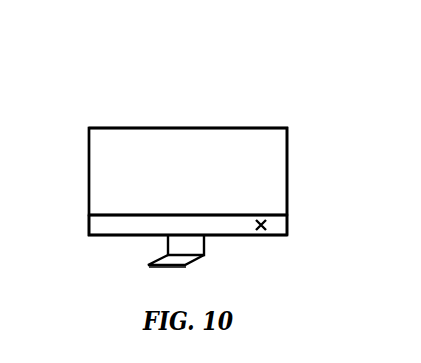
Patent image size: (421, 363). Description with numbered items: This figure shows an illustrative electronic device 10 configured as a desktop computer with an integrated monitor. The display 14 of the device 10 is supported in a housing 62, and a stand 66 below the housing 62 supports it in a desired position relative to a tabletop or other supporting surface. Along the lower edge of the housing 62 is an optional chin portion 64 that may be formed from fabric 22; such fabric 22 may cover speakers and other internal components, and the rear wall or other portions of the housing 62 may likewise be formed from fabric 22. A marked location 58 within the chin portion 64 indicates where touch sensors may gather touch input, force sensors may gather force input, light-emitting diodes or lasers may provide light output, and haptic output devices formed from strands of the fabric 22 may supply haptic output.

The electronic device 10 is at (307, 122).
The display 14 is at (119, 166).
The housing 62 is at (288, 176).
The chin portion 64 is at (92, 225).
The fabric 22 is at (288, 225).
The location 58 is at (262, 233).
The stand 66 is at (168, 245).